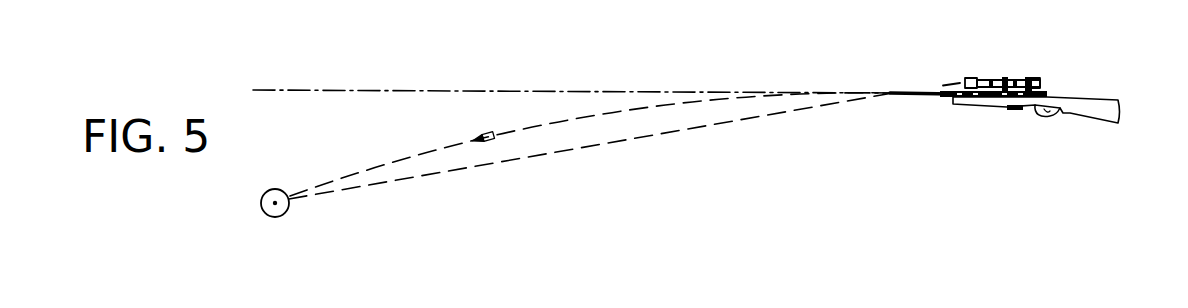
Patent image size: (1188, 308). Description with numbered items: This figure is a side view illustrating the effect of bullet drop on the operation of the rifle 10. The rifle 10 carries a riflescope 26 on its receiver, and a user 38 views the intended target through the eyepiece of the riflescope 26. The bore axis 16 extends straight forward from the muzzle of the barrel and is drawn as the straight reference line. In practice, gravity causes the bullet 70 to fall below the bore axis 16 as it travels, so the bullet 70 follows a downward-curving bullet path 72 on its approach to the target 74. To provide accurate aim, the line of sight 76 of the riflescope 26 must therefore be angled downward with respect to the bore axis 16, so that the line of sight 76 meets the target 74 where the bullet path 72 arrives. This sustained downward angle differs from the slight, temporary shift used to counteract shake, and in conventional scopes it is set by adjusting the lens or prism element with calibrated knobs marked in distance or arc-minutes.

The rifle 10 is at (1064, 131).
The bore axis 16 is at (462, 90).
The riflescope 26 is at (1008, 77).
The user 38 is at (1082, 72).
The bullet 70 is at (482, 144).
The bullet path 72 is at (379, 157).
The target 74 is at (276, 217).
The line of sight 76 is at (617, 149).